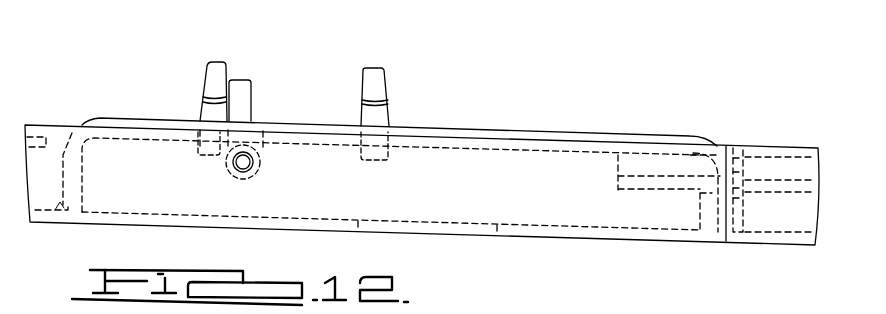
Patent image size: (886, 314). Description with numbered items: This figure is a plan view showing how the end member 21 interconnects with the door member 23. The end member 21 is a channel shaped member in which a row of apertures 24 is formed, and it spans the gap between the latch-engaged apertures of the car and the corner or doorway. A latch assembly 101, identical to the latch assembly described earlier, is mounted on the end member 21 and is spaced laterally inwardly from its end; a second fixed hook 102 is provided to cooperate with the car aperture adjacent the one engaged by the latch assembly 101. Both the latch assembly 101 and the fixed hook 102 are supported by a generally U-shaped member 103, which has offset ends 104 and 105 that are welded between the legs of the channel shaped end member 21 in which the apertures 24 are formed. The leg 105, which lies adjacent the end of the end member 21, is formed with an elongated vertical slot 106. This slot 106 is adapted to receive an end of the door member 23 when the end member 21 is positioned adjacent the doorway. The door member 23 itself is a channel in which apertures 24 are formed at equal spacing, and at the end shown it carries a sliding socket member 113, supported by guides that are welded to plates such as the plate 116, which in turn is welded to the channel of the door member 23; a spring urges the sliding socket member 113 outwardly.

The end member 21 is at (388, 233).
The door member 23 is at (779, 245).
The apertures 24 is at (283, 226).
The latch assembly 101 is at (237, 73).
The second fixed hook 102 is at (382, 68).
The U-shaped member 103 is at (530, 131).
The offset end 104 is at (82, 178).
The offset end 105 is at (700, 210).
The elongated vertical slot 106 is at (716, 150).
The sliding socket member 113 is at (616, 172).
The plate 116 is at (757, 157).